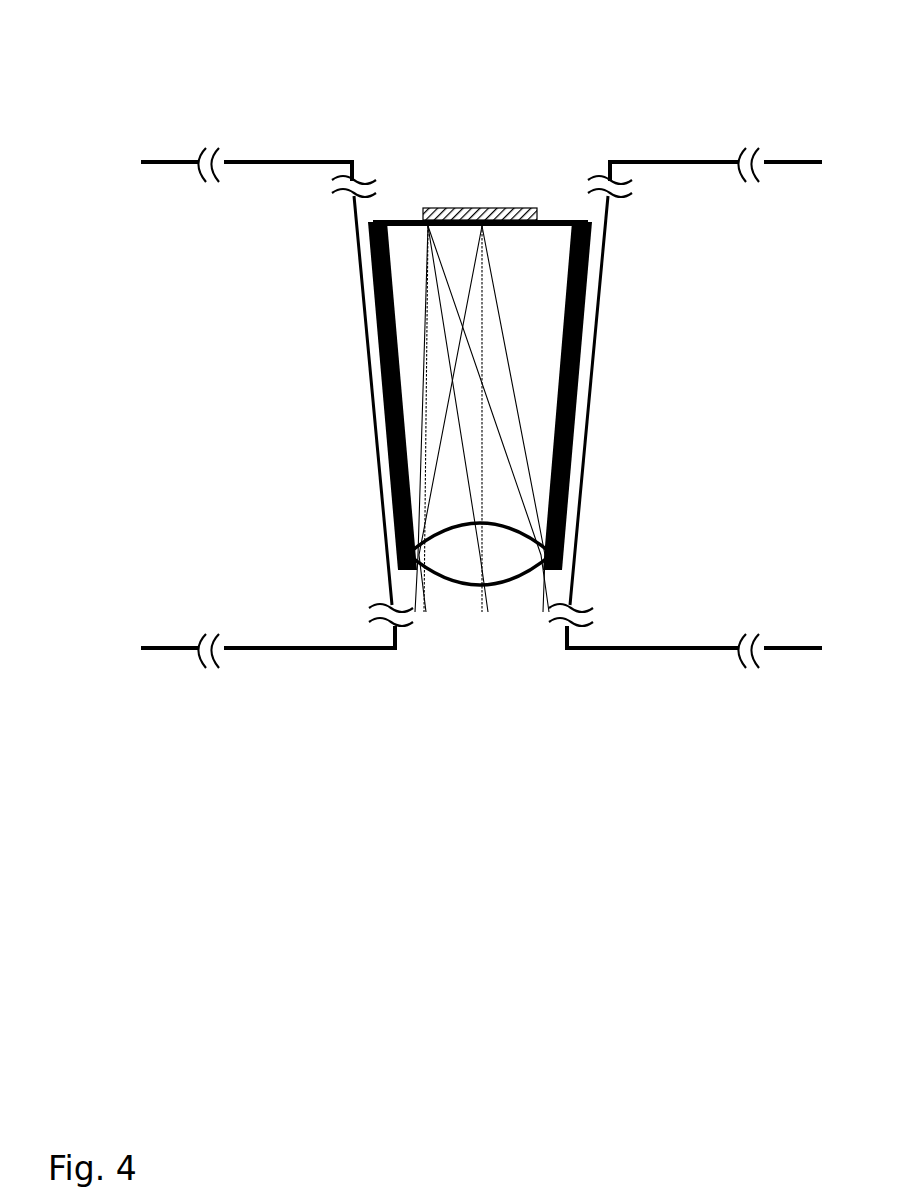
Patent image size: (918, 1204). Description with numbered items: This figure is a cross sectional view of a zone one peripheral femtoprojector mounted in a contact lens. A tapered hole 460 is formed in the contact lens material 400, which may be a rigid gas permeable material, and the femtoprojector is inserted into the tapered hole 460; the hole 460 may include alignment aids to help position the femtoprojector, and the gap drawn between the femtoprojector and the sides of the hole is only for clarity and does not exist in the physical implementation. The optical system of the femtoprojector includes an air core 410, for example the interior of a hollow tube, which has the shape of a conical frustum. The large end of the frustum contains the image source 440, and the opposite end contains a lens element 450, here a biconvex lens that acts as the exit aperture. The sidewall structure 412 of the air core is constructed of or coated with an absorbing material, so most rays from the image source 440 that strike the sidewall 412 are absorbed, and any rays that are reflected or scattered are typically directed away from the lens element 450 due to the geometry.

The contact lens material 400 is at (296, 393).
The tapered hole 460 is at (389, 176).
The air core 410 is at (548, 309).
The sidewall structure 412 is at (580, 220).
The image source 440 is at (485, 208).
The lens element 450 is at (526, 565).